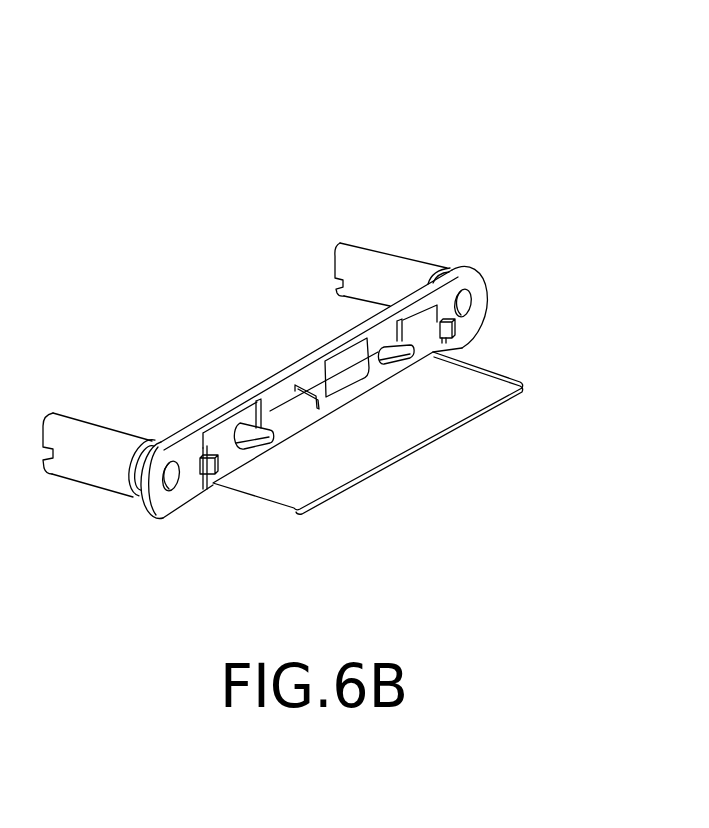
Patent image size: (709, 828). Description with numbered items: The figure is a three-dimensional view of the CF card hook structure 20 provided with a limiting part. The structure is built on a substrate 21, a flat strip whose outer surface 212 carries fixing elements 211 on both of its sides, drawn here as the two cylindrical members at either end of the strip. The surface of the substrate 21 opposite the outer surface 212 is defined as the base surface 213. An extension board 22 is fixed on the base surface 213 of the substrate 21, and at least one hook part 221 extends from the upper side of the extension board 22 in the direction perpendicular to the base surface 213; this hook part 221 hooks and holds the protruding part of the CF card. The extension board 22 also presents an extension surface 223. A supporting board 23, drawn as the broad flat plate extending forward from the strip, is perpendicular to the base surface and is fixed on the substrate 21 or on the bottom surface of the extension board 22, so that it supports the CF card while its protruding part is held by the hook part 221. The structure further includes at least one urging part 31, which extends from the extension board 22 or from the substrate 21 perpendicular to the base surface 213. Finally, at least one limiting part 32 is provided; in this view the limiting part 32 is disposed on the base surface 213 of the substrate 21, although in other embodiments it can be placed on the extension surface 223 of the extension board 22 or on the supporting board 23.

The CF card hook structure 20 is at (508, 120).
The substrate 21 is at (341, 332).
The fixing elements 211 is at (383, 267).
The outer surface 212 is at (204, 410).
The base surface 213 is at (460, 332).
The extension board 22 is at (290, 385).
The hook part 221 is at (325, 362).
The extension surface 223 is at (422, 343).
The supporting board 23 is at (320, 482).
The urging part 31 is at (262, 437).
The limiting part 32 is at (445, 320).